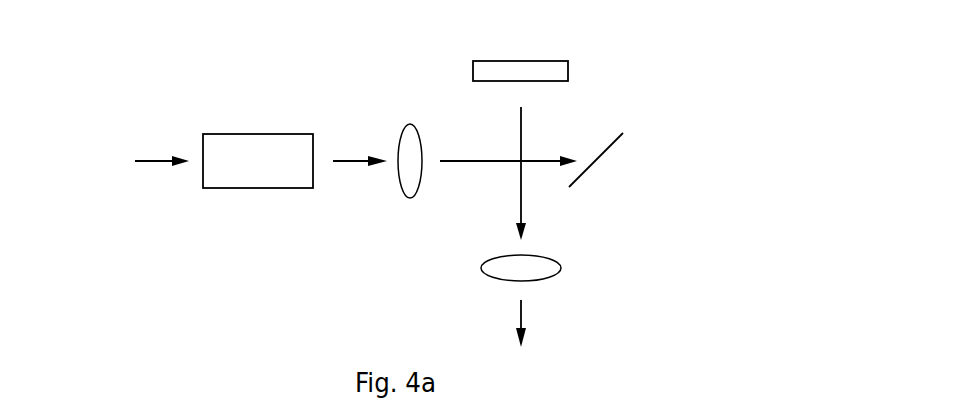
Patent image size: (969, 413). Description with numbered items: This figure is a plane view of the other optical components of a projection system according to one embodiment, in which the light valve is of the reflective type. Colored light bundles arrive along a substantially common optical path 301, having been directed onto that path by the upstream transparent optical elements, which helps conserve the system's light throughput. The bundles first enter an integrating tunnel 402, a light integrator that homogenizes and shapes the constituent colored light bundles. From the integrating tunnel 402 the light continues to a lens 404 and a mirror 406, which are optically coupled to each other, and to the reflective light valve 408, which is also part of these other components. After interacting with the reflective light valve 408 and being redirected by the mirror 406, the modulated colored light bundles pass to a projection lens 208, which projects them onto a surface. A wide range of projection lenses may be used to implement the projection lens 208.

The common optical path 301 is at (130, 175).
The integrating tunnel 402 is at (253, 133).
The lens 404 is at (412, 198).
The mirror 406 is at (602, 157).
The reflective light valve 408 is at (528, 61).
The projection lens 208 is at (561, 268).